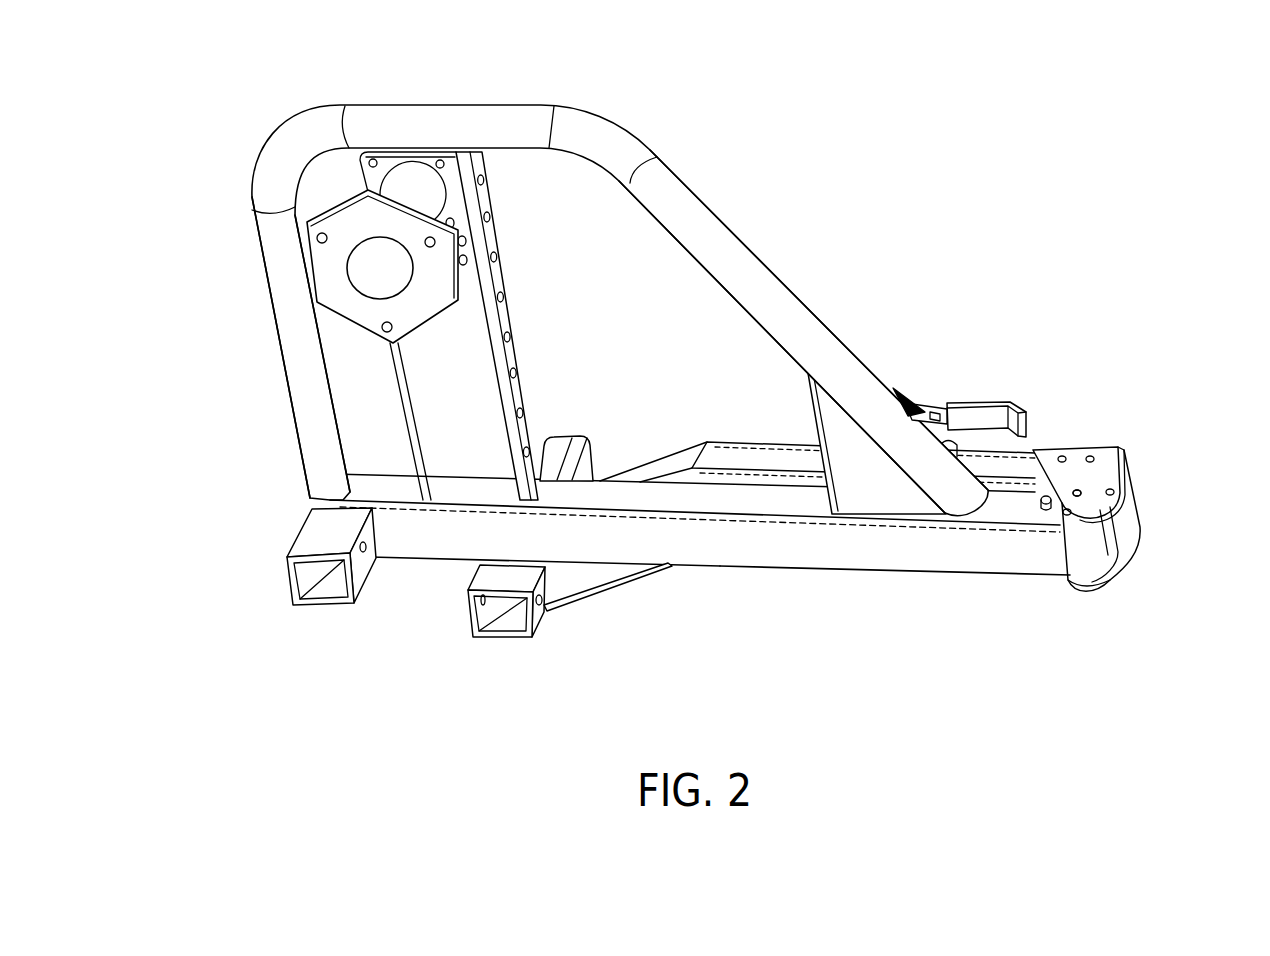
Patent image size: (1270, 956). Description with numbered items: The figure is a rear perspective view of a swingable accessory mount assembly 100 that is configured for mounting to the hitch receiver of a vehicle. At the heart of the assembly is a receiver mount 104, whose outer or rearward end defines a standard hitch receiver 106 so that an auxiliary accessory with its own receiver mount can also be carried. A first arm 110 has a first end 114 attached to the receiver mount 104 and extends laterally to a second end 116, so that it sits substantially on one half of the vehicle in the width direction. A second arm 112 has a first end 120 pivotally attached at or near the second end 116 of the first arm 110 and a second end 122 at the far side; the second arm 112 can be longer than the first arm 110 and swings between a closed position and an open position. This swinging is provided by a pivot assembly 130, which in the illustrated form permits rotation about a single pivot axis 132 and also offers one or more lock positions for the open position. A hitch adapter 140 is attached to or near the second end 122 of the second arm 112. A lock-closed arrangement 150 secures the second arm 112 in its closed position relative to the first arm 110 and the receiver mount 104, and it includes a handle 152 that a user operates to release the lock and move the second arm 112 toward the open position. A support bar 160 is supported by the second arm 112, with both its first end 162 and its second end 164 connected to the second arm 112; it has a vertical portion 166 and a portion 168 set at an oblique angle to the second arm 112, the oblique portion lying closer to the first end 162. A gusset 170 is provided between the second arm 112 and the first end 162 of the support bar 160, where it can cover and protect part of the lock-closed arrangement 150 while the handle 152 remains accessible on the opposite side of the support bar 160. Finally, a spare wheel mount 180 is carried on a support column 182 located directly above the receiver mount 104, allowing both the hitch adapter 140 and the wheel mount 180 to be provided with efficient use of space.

The accessory mount assembly 100 is at (920, 170).
The receiver mount 104 is at (606, 443).
The hitch receiver 106 is at (531, 640).
The first arm 110 is at (710, 426).
The second arm 112 is at (773, 592).
The first end 114 is at (606, 610).
The second end 116 is at (1043, 442).
The first end 120 is at (1026, 596).
The second end 122 is at (409, 579).
The pivot assembly 130 is at (1148, 483).
The pivot axis 132 is at (1080, 494).
The hitch adapter 140 is at (298, 622).
The lock-closed arrangement 150 is at (939, 380).
The handle 152 is at (1013, 402).
The support bar 160 is at (644, 111).
The first end 162 is at (815, 292).
The second end 164 is at (257, 345).
The vertical portion 166 is at (283, 288).
The oblique portion 168 is at (742, 242).
The gusset 170 is at (813, 411).
The spare wheel mount 180 is at (512, 230).
The support column 182 is at (509, 307).